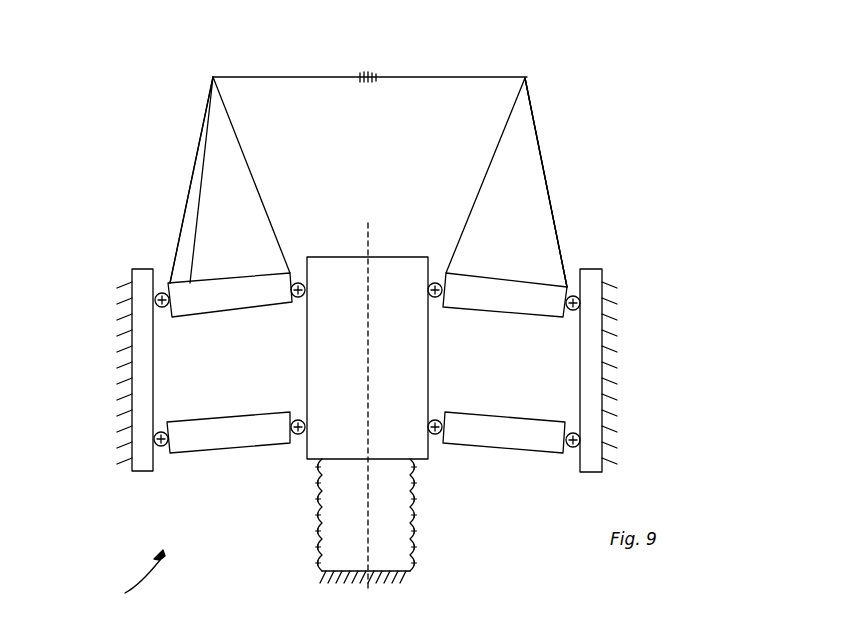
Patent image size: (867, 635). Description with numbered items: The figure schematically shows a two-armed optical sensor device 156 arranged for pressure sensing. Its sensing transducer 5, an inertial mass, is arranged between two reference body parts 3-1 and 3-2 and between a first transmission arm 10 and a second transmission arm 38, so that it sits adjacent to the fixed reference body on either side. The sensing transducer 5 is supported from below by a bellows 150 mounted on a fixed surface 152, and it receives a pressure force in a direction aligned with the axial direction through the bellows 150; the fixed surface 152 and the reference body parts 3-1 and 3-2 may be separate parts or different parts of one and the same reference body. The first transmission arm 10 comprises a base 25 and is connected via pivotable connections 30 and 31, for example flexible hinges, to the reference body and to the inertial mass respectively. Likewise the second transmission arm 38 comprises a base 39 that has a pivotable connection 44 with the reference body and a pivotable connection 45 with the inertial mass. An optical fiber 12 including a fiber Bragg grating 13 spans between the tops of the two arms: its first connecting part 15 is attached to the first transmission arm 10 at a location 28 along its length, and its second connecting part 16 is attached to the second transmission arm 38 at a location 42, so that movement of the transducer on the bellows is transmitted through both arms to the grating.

The sensing transducer 5 is at (397, 257).
The first transmission arm 10 is at (542, 163).
The optical fiber 12 is at (408, 79).
The fiber Bragg grating 13 is at (367, 81).
The first connecting part 15 is at (525, 78).
The second connecting part 16 is at (213, 76).
The base 25 is at (500, 312).
The location 28 is at (531, 80).
The pivotable connection 30 is at (438, 306).
The pivotable connection 31 is at (574, 310).
The second transmission arm 38 is at (197, 150).
The base 39 is at (226, 313).
The location 42 is at (209, 77).
The pivotable connection 44 is at (298, 299).
The pivotable connection 45 is at (167, 310).
The bellows 150 is at (416, 500).
The fixed surface 152 is at (410, 573).
The optical sensor device 156 is at (122, 579).
The reference body part 3-1 is at (602, 269).
The reference body part 3-2 is at (140, 268).